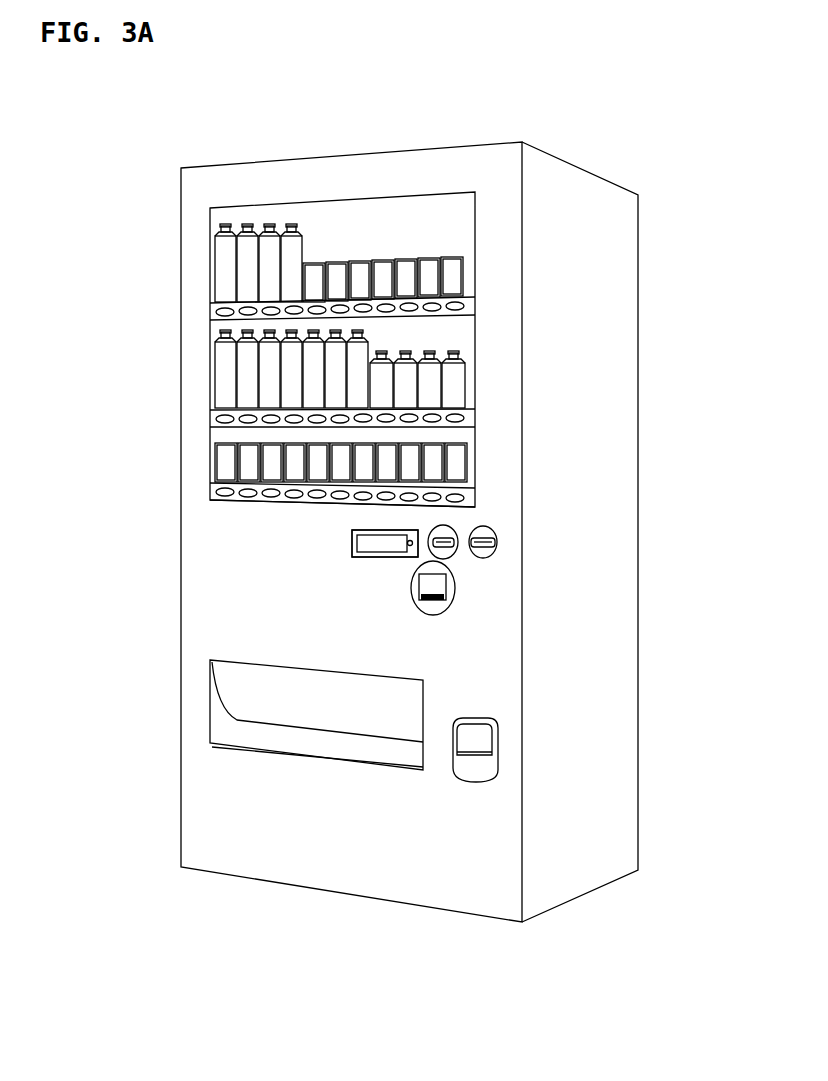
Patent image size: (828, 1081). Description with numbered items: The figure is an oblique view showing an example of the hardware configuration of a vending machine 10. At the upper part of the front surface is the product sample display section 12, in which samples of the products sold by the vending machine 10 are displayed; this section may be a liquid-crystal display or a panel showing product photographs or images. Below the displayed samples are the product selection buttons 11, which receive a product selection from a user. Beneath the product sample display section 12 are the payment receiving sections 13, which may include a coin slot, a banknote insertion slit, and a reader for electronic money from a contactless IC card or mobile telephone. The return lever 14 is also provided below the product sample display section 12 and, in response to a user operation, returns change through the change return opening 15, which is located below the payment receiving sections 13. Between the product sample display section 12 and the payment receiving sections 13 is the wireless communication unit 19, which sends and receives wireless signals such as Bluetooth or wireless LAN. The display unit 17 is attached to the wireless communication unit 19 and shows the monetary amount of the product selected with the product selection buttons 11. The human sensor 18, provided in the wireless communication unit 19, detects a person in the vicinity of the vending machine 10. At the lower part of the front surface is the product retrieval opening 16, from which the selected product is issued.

The vending machine 10 is at (297, 158).
The product selection buttons 11 is at (480, 300).
The product sample display section 12 is at (447, 210).
The payment receiving sections 13 is at (456, 585).
The return lever 14 is at (445, 534).
The change return opening 15 is at (475, 755).
The product retrieval opening 16 is at (228, 722).
The display unit 17 is at (358, 558).
The human sensor 18 is at (408, 560).
The wireless communication unit 19 is at (343, 539).